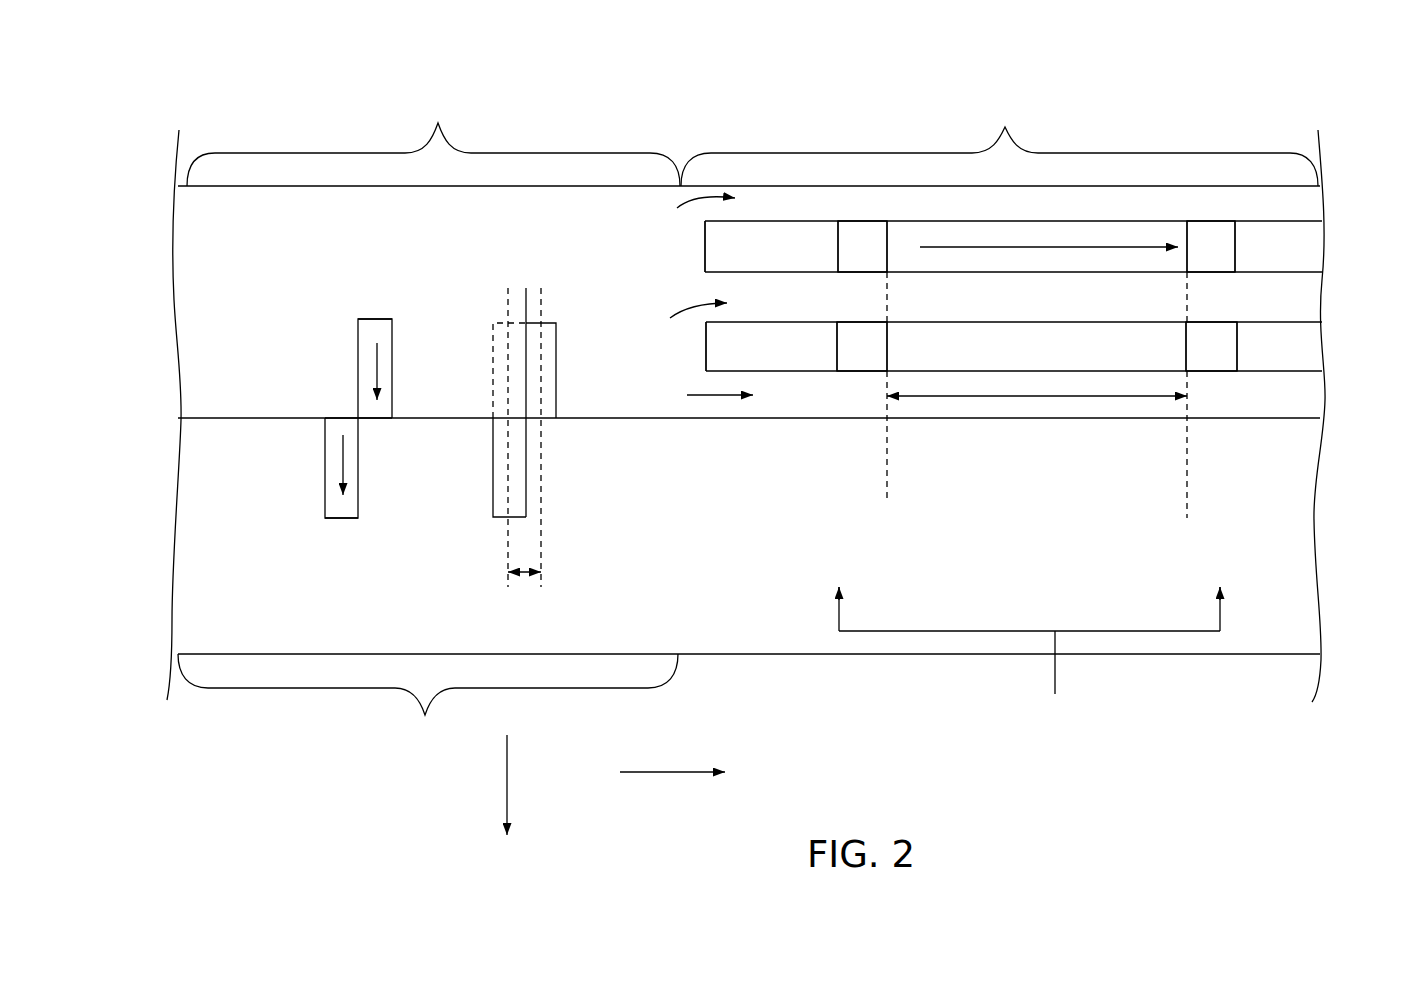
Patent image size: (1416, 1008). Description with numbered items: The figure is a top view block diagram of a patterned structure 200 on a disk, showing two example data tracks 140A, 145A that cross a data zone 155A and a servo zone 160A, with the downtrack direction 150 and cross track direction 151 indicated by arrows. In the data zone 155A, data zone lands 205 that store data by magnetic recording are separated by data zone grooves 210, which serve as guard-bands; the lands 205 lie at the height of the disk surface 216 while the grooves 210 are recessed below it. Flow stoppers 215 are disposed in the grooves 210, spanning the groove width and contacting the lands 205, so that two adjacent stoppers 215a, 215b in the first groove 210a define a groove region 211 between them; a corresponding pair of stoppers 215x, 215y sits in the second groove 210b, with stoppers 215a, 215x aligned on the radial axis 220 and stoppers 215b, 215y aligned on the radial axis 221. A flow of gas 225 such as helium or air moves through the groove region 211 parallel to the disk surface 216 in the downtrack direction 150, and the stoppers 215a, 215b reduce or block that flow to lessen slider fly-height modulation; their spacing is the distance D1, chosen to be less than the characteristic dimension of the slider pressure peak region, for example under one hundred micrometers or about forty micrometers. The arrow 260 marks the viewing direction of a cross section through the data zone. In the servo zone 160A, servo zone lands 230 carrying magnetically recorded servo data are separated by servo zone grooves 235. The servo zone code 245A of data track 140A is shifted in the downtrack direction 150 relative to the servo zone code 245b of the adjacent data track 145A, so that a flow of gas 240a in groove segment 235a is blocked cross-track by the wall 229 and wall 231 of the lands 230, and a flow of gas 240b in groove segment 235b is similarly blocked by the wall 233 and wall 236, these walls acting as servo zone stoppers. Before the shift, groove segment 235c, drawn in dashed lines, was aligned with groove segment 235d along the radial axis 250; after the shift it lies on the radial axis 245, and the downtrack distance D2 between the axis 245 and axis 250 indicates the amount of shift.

The patterned structure 200 is at (745, 135).
The servo zone 160A is at (429, 422).
The data zone 155A is at (999, 145).
The data zone lands 205 is at (701, 301).
The data zone grooves 210 is at (706, 352).
The first groove 210a is at (1302, 241).
The second groove 210b is at (1293, 297).
The groove region 211 is at (948, 256).
The flow stoppers 215 is at (871, 233).
The stopper 215a is at (862, 246).
The stopper 215b is at (1211, 246).
The stopper 215x is at (862, 346).
The stopper 215y is at (1212, 346).
The disk surface 216 is at (1270, 625).
The radial axis 220 is at (889, 462).
The radial axis 221 is at (1186, 478).
The flow of gas 225 is at (1077, 245).
The wall 229 is at (372, 418).
The servo zone lands 230 is at (440, 384).
The wall 231 is at (375, 319).
The wall 233 is at (342, 518).
The servo zone grooves 235 is at (556, 298).
The groove segment 235a is at (358, 337).
The groove segment 235b is at (325, 444).
The groove segment 235c is at (493, 362).
The groove segment 235d is at (493, 500).
The wall 236 is at (338, 418).
The flow of gas 240a is at (377, 369).
The flow of gas 240b is at (343, 460).
The radial axis 245 is at (541, 530).
The servo zone code 245A is at (216, 358).
The servo zone code 245b is at (216, 527).
The radial axis 250 is at (508, 545).
The arrow 260 is at (1029, 653).
The data track 140A is at (1305, 408).
The data track 145A is at (1290, 543).
The downtrack direction 150 is at (672, 770).
The cross track direction 151 is at (510, 770).
The distance D1 is at (980, 397).
The downtrack distance D2 is at (545, 575).